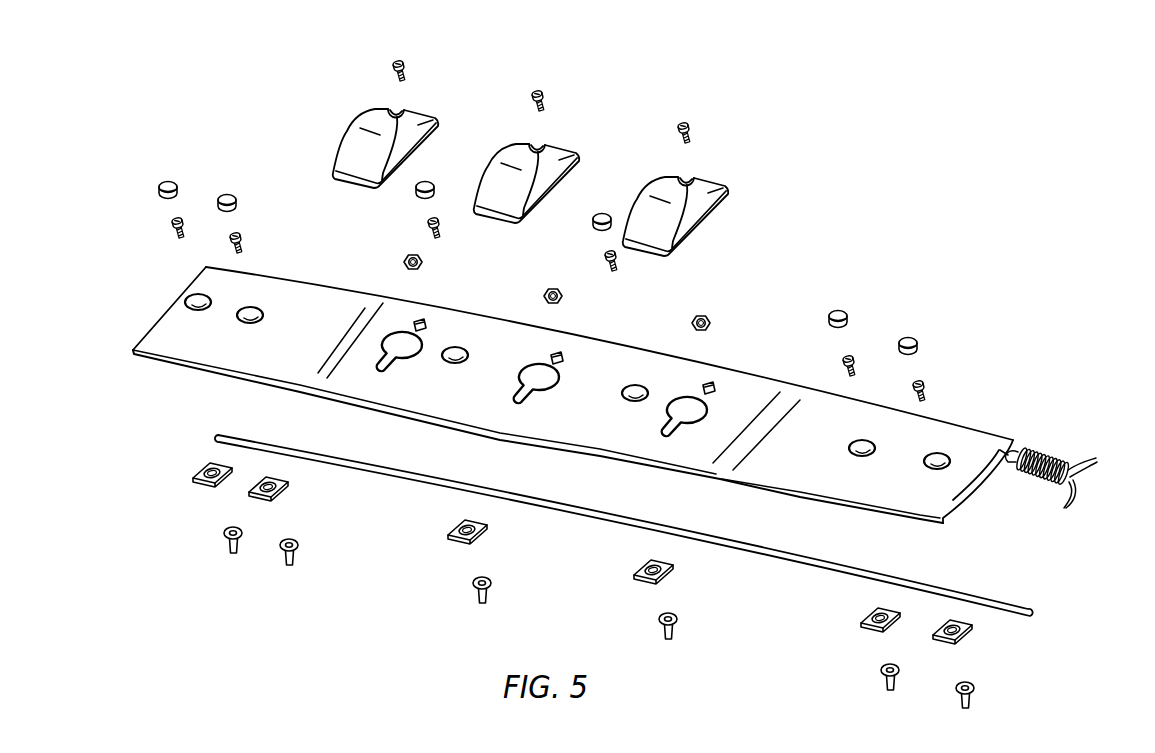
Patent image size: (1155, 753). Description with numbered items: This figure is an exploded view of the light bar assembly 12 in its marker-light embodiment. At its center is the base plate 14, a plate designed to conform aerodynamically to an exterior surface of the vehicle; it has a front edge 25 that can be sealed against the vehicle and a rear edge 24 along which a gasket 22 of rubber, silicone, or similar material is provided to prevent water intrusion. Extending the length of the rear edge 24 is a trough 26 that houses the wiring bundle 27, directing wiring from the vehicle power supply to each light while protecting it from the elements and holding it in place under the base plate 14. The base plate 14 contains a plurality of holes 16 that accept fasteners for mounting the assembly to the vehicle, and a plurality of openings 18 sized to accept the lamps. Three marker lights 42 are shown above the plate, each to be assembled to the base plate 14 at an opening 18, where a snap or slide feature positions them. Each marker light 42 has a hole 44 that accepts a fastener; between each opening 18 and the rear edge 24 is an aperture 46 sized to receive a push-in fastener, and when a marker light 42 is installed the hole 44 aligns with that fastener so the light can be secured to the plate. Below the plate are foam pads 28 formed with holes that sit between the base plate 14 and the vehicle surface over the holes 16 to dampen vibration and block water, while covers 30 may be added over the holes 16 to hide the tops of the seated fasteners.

The light bar assembly 12 is at (893, 103).
The base plate 14 is at (983, 456).
The holes 16 is at (240, 312).
The openings 18 is at (376, 346).
The gasket 22 is at (1034, 610).
The rear edge 24 is at (948, 422).
The front edge 25 is at (147, 353).
The trough 26 is at (1010, 464).
The wiring bundle 27 is at (1053, 448).
The foam pads 28 is at (966, 640).
The covers 30 is at (908, 335).
The marker lights 42 is at (434, 119).
The hole 44 is at (397, 112).
The aperture 46 is at (419, 319).